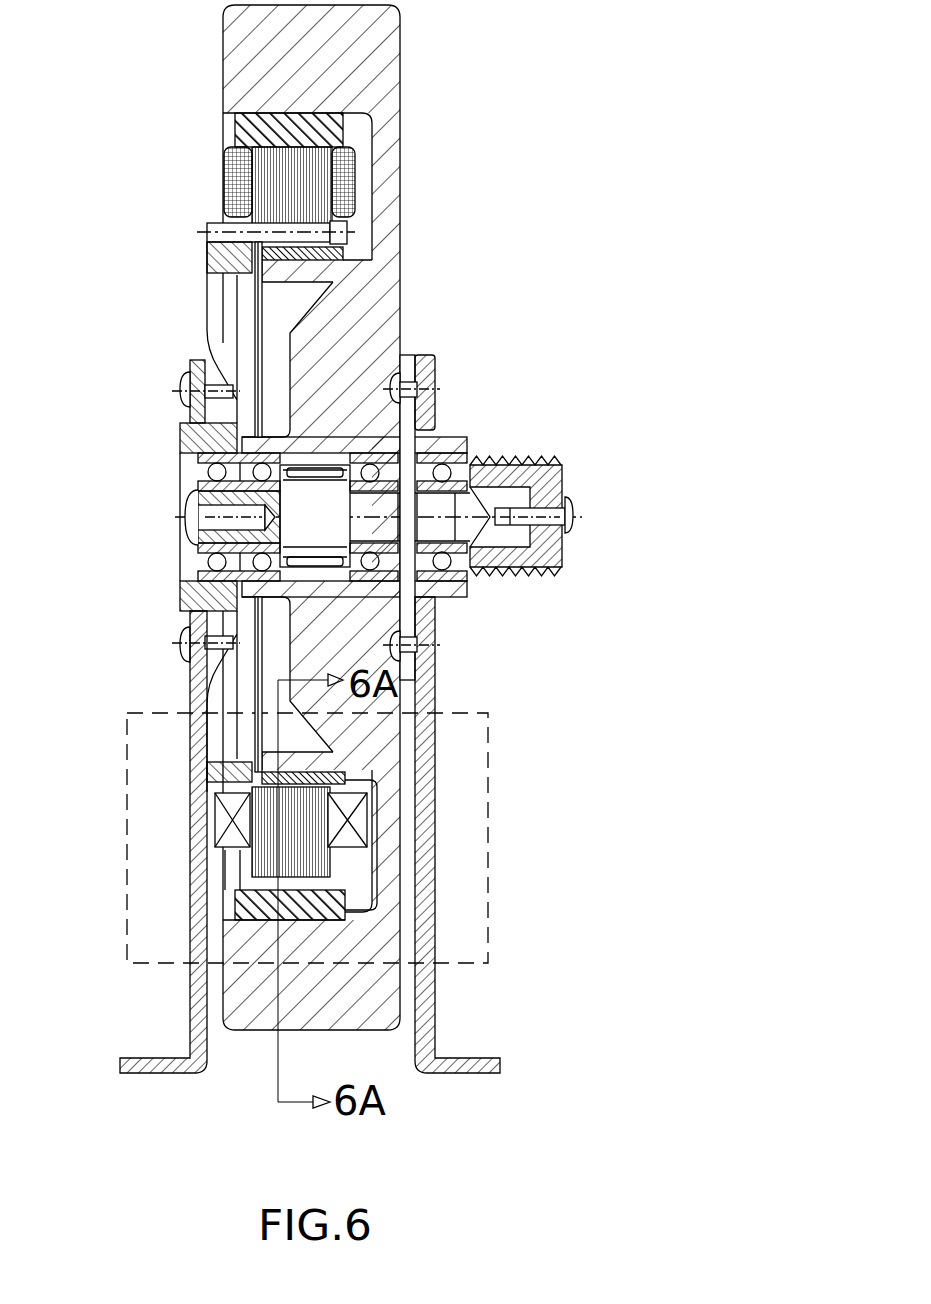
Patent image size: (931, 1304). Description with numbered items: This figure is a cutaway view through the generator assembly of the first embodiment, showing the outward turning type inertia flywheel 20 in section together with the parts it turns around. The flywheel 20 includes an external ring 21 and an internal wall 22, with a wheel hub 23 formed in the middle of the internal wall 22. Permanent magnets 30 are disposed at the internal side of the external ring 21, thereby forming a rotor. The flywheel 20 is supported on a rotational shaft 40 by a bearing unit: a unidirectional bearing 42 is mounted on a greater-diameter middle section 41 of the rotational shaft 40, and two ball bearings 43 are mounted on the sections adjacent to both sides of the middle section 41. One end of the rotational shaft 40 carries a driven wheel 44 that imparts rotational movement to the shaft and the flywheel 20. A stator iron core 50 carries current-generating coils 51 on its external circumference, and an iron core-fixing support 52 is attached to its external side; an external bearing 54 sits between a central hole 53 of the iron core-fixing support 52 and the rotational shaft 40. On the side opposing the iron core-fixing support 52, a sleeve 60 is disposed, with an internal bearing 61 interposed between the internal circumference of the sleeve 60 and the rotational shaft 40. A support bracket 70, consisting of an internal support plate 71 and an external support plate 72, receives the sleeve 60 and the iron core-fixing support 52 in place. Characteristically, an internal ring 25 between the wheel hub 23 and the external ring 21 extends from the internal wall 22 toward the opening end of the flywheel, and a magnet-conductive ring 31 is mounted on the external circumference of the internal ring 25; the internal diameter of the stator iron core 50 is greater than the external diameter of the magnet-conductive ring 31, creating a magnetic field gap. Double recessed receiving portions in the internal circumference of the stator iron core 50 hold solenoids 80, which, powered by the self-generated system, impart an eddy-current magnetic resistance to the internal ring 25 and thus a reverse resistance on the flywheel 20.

The outward turning type inertia flywheel 20 is at (442, 126).
The external ring 21 is at (368, 47).
The internal wall 22 is at (400, 187).
The wheel hub 23 is at (310, 332).
The internal ring 25 is at (287, 277).
The permanent magnets 30 is at (237, 128).
The magnet-conductive ring 31 is at (252, 260).
The rotational shaft 40 is at (457, 512).
The middle section 41 is at (440, 480).
The unidirectional bearing 42 is at (322, 470).
The ball bearings 43 is at (423, 603).
The driven wheel 44 is at (545, 455).
The stator iron core 50 is at (280, 158).
The current-generating coils 51 is at (225, 192).
The iron core-fixing support 52 is at (192, 434).
The central hole 53 is at (190, 554).
The external bearing 54 is at (215, 472).
The sleeve 60 is at (467, 570).
The internal bearing 61 is at (457, 578).
The support bracket 70 is at (532, 1063).
The internal support plate 71 is at (434, 1012).
The external support plate 72 is at (187, 1020).
The solenoids 80 is at (350, 830).